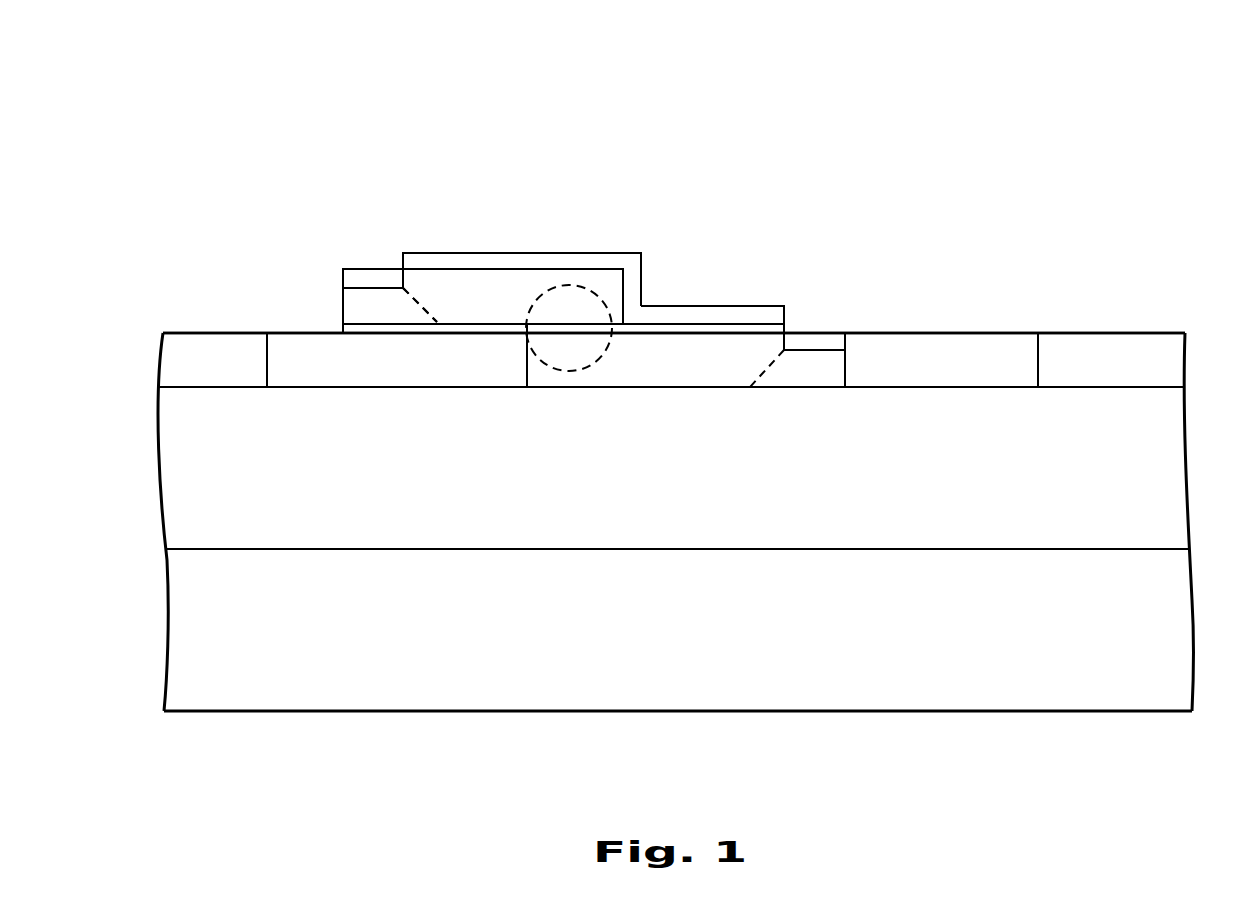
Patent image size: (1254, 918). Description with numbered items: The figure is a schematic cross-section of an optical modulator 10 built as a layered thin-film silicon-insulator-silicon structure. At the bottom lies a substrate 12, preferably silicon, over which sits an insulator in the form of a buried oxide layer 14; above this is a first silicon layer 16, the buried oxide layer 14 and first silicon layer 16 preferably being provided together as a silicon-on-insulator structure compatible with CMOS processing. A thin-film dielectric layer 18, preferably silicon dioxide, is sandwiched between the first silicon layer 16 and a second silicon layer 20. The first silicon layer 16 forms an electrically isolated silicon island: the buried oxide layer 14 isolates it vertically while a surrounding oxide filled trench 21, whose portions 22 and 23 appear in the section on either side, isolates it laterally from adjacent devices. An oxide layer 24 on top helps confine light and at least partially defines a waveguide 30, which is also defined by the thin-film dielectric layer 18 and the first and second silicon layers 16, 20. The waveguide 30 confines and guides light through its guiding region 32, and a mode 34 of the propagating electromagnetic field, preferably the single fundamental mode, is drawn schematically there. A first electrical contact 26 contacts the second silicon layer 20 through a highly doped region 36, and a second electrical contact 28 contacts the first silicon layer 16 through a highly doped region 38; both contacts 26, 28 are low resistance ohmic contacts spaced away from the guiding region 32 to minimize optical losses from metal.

The optical modulator 10 is at (725, 105).
The substrate 12 is at (627, 673).
The buried oxide layer 14 is at (1148, 468).
The first silicon layer 16 is at (710, 355).
The thin-film dielectric layer 18 is at (572, 327).
The second silicon layer 20 is at (455, 283).
The oxide filled trench 21 is at (1002, 335).
The trench portion 22 is at (308, 347).
The trench portion 23 is at (928, 357).
The oxide layer 24 is at (540, 260).
The first electrical contact 26 is at (360, 283).
The second electrical contact 28 is at (812, 342).
The waveguide 30 is at (518, 90).
The guiding region 32 is at (593, 298).
The mode 34 is at (545, 305).
The highly doped region 36 is at (372, 312).
The highly doped region 38 is at (818, 367).